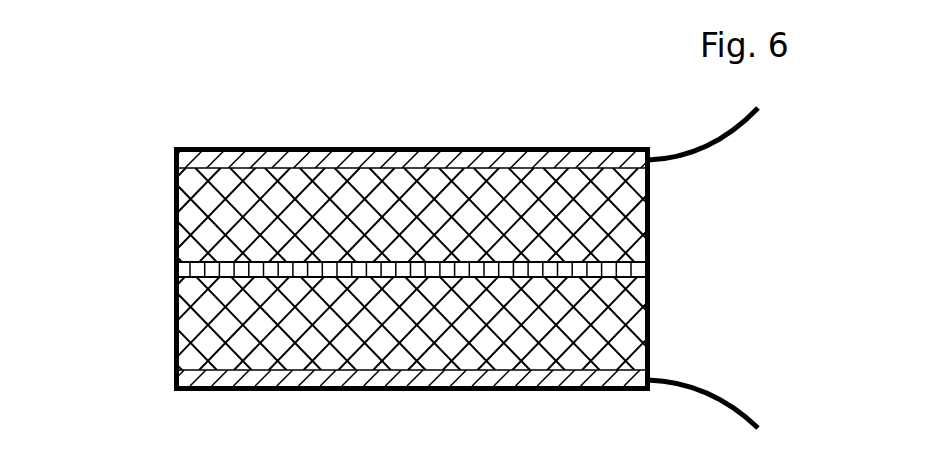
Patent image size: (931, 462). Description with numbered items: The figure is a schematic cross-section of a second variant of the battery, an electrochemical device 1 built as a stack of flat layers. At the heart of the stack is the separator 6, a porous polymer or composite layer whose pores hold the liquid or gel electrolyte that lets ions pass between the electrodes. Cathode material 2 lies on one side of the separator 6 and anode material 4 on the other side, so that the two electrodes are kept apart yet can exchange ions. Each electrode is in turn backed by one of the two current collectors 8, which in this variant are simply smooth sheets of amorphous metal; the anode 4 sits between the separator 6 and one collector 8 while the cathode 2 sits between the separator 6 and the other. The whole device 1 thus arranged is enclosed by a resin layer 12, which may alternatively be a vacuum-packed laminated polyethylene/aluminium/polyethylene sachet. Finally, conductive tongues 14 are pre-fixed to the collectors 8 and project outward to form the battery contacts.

The electrochemical device 1 is at (112, 148).
The cathode 2 is at (217, 196).
The anode 4 is at (198, 341).
The separator 6 is at (188, 272).
The current collectors 8 is at (480, 162).
The resin layer 12 is at (385, 386).
The conductive tongues 14 is at (695, 152).